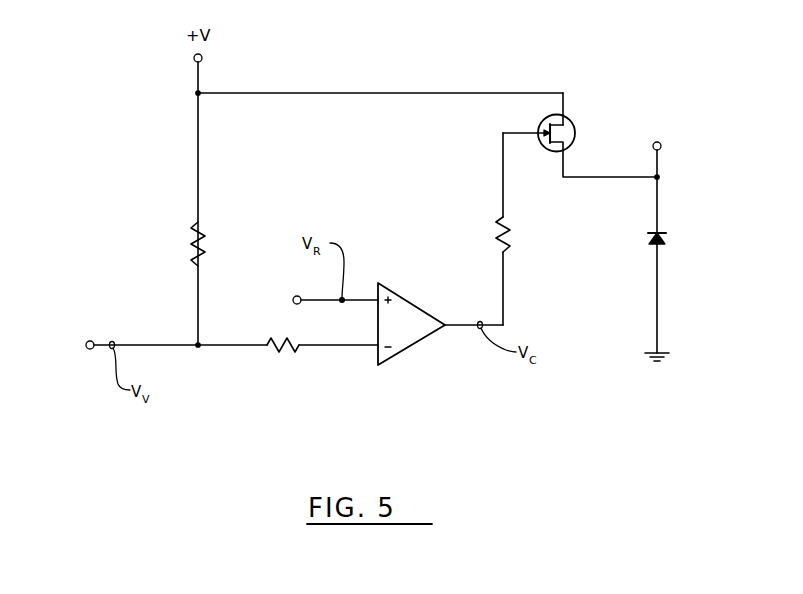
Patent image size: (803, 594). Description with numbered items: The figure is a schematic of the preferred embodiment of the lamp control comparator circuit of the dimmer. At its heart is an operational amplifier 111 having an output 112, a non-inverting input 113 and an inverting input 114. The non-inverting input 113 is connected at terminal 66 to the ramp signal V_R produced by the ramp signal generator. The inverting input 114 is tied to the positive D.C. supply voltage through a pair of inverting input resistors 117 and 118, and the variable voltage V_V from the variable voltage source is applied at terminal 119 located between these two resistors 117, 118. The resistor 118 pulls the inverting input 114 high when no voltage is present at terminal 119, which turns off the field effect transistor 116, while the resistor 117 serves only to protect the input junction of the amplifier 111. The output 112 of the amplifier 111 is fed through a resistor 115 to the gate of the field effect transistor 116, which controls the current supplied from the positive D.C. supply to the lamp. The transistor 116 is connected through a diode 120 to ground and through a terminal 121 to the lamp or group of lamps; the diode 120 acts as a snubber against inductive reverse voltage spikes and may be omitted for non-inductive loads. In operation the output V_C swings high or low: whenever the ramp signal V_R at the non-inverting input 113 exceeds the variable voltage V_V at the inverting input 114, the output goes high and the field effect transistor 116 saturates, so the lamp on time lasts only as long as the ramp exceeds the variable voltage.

The terminal 66 is at (281, 301).
The operational amplifier 111 is at (410, 301).
The output 112 is at (449, 327).
The non-inverting input 113 is at (368, 300).
The inverting input 114 is at (372, 348).
The resistor 115 is at (508, 236).
The field effect transistor 116 is at (566, 119).
The inverting input resistor 117 is at (294, 350).
The inverting input resistor 118 is at (206, 234).
The terminal 119 is at (153, 346).
The diode 120 is at (665, 241).
The terminal 121 is at (657, 178).